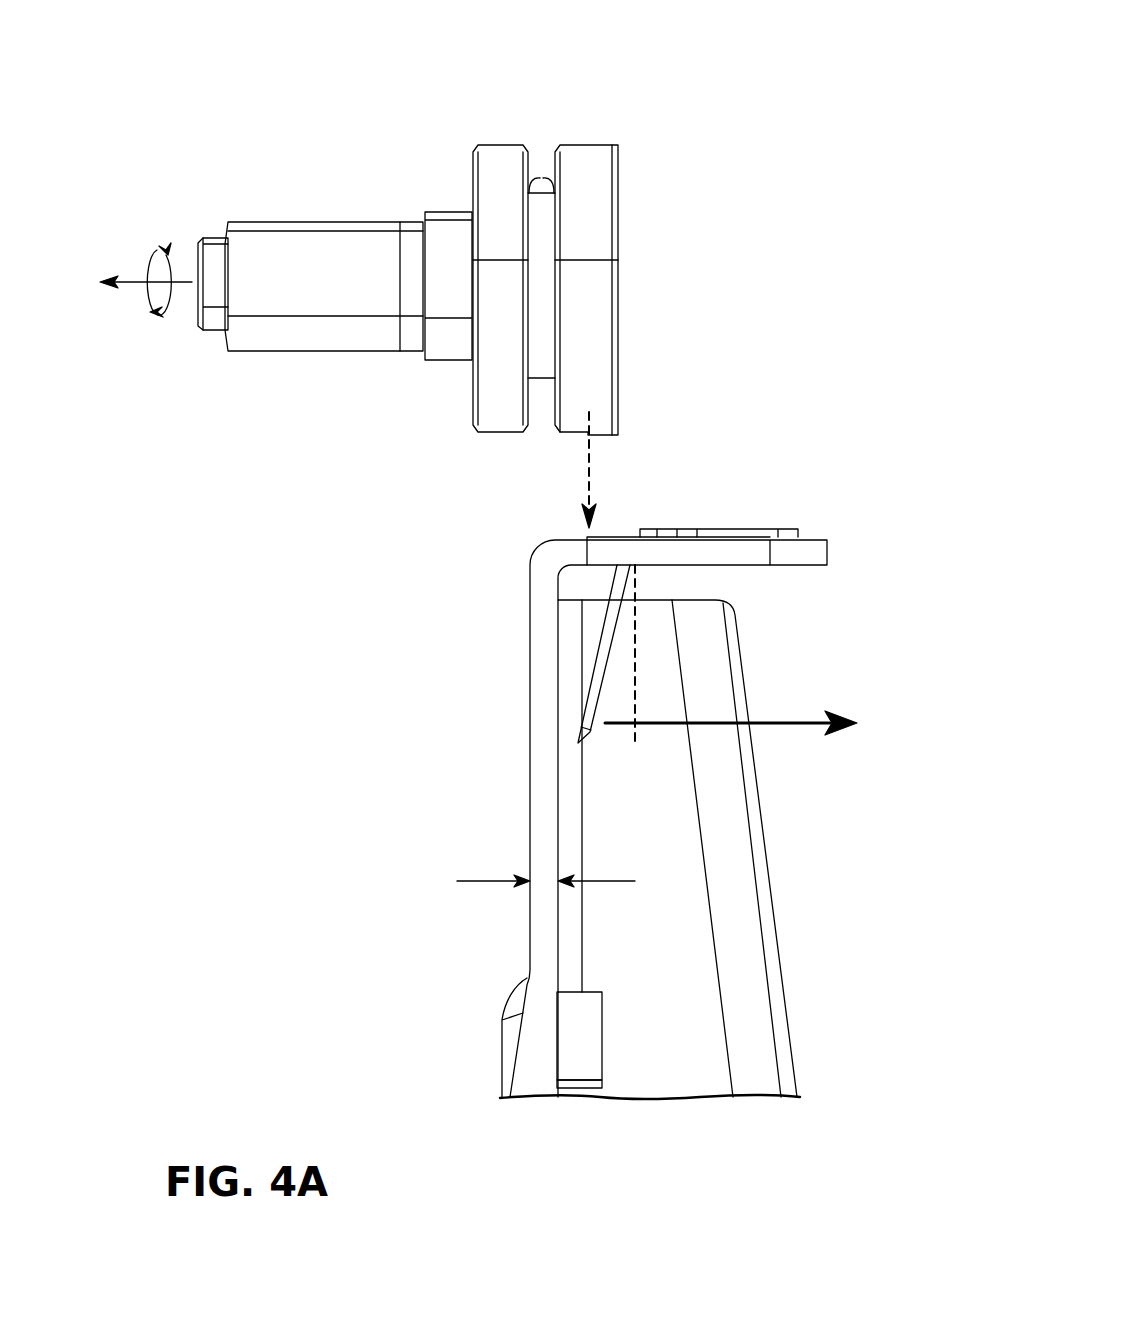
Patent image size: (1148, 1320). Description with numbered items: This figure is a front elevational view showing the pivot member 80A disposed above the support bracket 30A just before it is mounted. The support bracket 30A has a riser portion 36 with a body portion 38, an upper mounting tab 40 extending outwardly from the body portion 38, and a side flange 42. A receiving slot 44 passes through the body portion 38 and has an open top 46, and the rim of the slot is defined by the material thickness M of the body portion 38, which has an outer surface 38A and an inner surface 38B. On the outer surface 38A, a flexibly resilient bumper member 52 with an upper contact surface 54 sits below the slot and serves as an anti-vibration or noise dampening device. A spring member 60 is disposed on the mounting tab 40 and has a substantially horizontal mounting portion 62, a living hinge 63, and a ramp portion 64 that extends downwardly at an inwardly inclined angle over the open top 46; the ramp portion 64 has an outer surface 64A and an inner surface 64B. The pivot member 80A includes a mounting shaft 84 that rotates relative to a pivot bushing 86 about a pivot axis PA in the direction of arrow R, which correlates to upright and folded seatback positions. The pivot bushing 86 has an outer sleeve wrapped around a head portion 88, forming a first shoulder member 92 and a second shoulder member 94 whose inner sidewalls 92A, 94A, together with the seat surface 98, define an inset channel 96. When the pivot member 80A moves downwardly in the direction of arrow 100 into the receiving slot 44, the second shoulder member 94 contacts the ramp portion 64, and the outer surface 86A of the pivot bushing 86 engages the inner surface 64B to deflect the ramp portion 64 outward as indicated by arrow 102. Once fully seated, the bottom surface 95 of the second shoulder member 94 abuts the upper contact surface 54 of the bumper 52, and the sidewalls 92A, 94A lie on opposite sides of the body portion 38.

The support bracket 30A is at (408, 875).
The riser portion 36 is at (497, 703).
The body portion 38 is at (545, 815).
The outer surface 38A is at (585, 818).
The inner surface 38B is at (528, 796).
The upper mounting tab 40 is at (810, 557).
The side flange 42 is at (728, 923).
The receiving slot 44 is at (512, 661).
The open top 46 is at (532, 553).
The bumper member 52 is at (602, 1043).
The upper contact surface 54 is at (596, 990).
The spring member 60 is at (753, 515).
The mounting portion 62 is at (768, 528).
The living hinge 63 is at (640, 528).
The ramp portion 64 is at (608, 690).
The outer surface 64A is at (607, 660).
The inner surface 64B is at (608, 663).
The pivot member 80A is at (668, 110).
The mounting shaft 84 is at (330, 247).
The pivot bushing 86 is at (631, 244).
The outer surface 86A is at (618, 398).
The head portion 88 is at (618, 322).
The first shoulder member 92 is at (500, 157).
The inner sidewall 92A is at (530, 186).
The second shoulder member 94 is at (581, 152).
The inner sidewall 94A is at (550, 185).
The bottom surface 95 is at (605, 433).
The inset channel 96 is at (536, 140).
The seat surface 98 is at (548, 343).
The arrow 100 is at (586, 472).
The arrow 102 is at (797, 726).
The arrow R is at (156, 246).
The pivot axis PA is at (132, 287).
The material thickness M is at (490, 882).